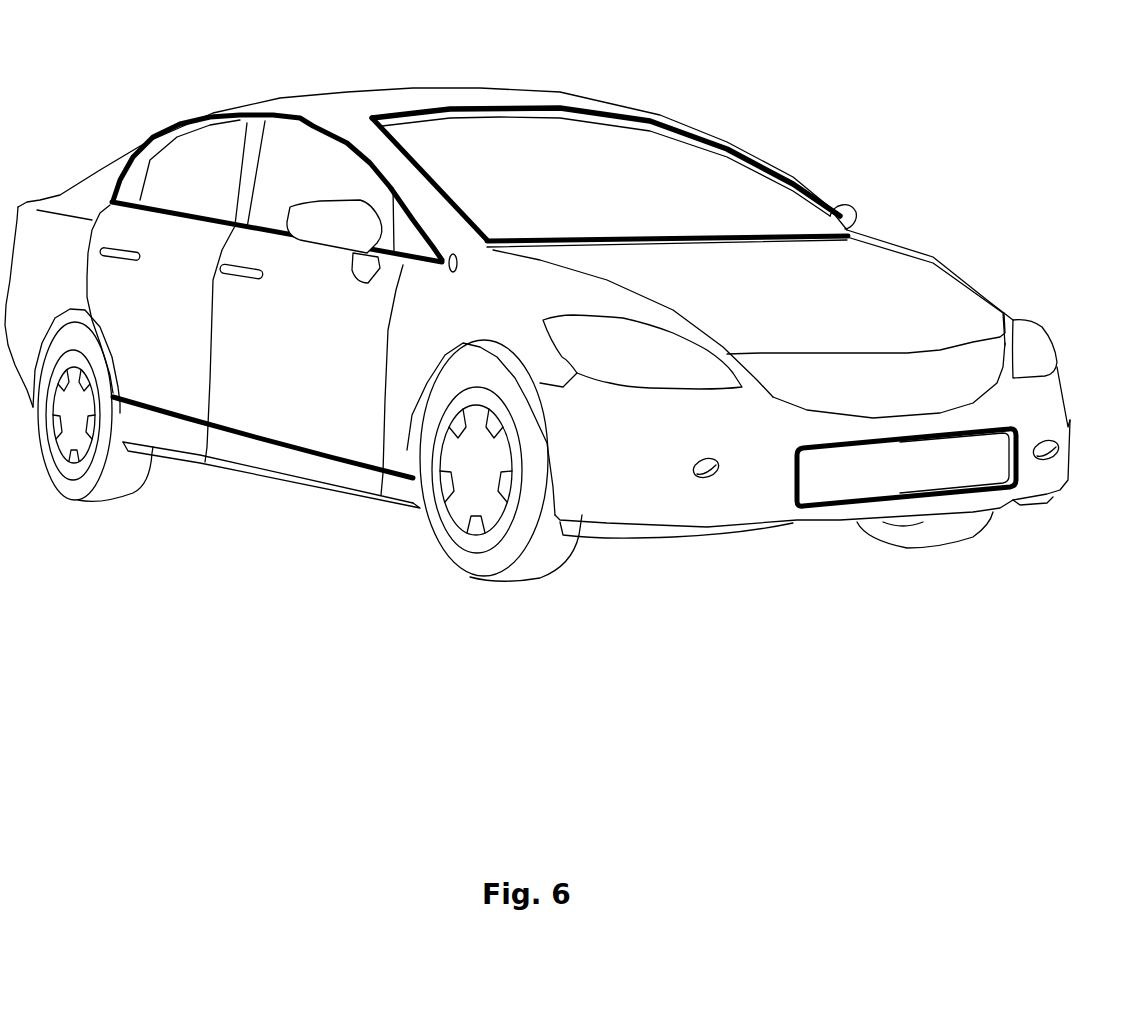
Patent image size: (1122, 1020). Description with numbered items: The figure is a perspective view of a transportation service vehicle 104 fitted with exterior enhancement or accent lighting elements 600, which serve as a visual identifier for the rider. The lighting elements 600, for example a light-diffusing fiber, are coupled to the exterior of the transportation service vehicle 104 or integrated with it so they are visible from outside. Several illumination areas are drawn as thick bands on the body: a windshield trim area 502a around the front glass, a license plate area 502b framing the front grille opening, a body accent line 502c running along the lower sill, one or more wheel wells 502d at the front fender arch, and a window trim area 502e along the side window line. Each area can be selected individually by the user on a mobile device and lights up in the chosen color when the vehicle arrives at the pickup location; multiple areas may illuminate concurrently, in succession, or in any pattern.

The exterior enhancement or accent lighting elements 600 is at (118, 90).
The transportation service vehicle 104 is at (863, 312).
The windshield trim area 502a is at (396, 101).
The license plate area 502b is at (822, 513).
The body accent line 502c is at (362, 474).
The wheel wells 502d is at (462, 342).
The window trim area 502e is at (188, 221).